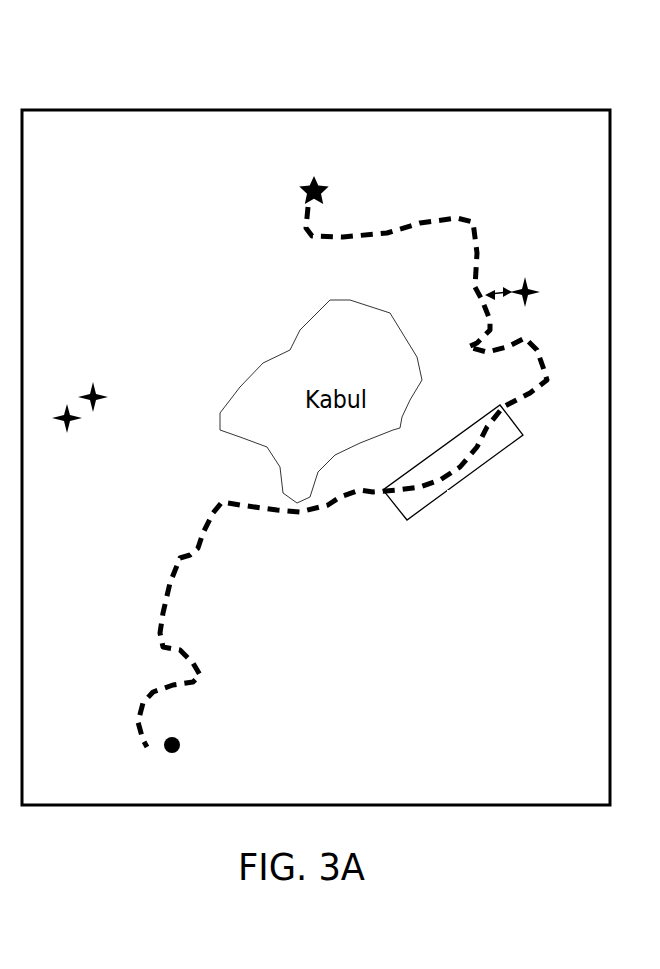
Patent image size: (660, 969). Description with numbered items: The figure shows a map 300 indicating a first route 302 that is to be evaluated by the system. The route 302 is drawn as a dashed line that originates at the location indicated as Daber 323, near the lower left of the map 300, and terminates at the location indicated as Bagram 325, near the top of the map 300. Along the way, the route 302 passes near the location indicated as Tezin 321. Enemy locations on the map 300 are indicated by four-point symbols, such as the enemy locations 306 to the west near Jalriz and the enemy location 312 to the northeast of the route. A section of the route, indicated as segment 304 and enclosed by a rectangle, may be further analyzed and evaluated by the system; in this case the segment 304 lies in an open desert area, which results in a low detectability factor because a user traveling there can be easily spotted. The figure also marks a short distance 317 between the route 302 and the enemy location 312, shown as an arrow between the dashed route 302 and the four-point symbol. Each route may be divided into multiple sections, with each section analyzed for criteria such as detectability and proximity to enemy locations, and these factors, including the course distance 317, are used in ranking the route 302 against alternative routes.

The map 300 is at (298, 61).
The first route 302 is at (207, 530).
The section of the route 304 is at (493, 460).
The enemy location 306 is at (57, 428).
The enemy location 312 is at (523, 280).
The short distance 317 is at (498, 297).
The Tezin 321 is at (487, 527).
The Daber 323 is at (283, 743).
The Bagram 325 is at (365, 175).